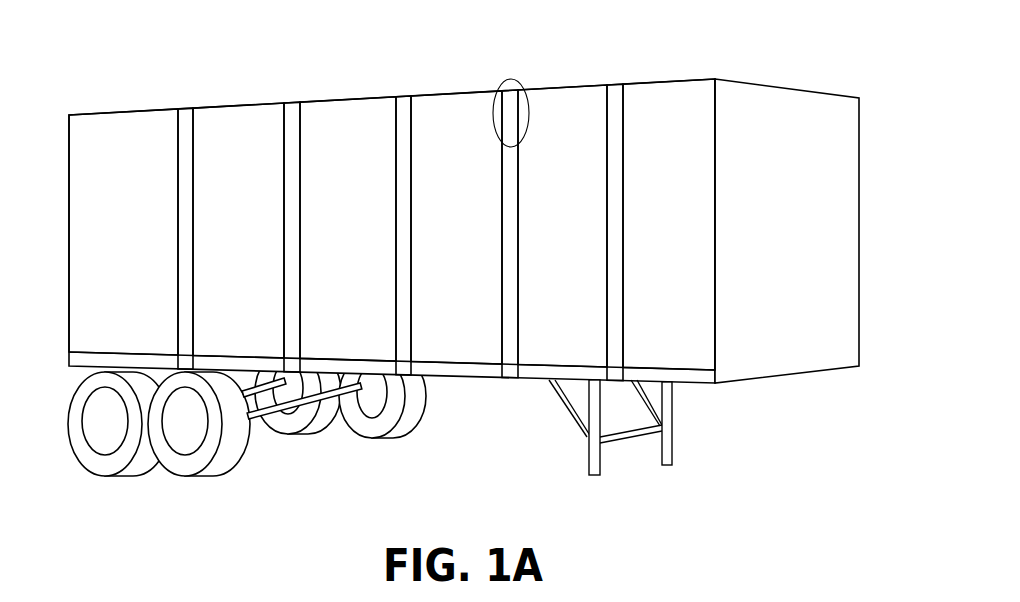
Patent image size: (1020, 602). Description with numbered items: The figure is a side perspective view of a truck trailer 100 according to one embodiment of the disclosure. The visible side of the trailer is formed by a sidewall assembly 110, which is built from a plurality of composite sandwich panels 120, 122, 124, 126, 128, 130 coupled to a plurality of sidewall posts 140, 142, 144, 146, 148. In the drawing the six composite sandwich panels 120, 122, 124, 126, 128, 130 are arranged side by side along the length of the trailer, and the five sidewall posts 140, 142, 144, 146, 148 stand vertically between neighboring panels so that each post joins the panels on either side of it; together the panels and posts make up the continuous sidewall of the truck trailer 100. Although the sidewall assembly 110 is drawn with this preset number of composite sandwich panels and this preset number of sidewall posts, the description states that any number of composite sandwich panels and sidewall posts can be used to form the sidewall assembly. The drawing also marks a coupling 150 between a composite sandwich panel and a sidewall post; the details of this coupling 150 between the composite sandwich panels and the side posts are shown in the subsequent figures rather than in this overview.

The truck trailer 100 is at (465, 17).
The sidewall assembly 110 is at (464, 208).
The composite sandwich panel 120 is at (139, 250).
The composite sandwich panel 122 is at (247, 250).
The composite sandwich panel 124 is at (364, 250).
The composite sandwich panel 126 is at (471, 250).
The composite sandwich panel 128 is at (571, 250).
The composite sandwich panel 130 is at (677, 250).
The sidewall post 140 is at (216, 238).
The sidewall post 142 is at (324, 237).
The sidewall post 144 is at (434, 235).
The sidewall post 146 is at (540, 234).
The sidewall post 148 is at (646, 232).
The coupling 150 is at (540, 94).